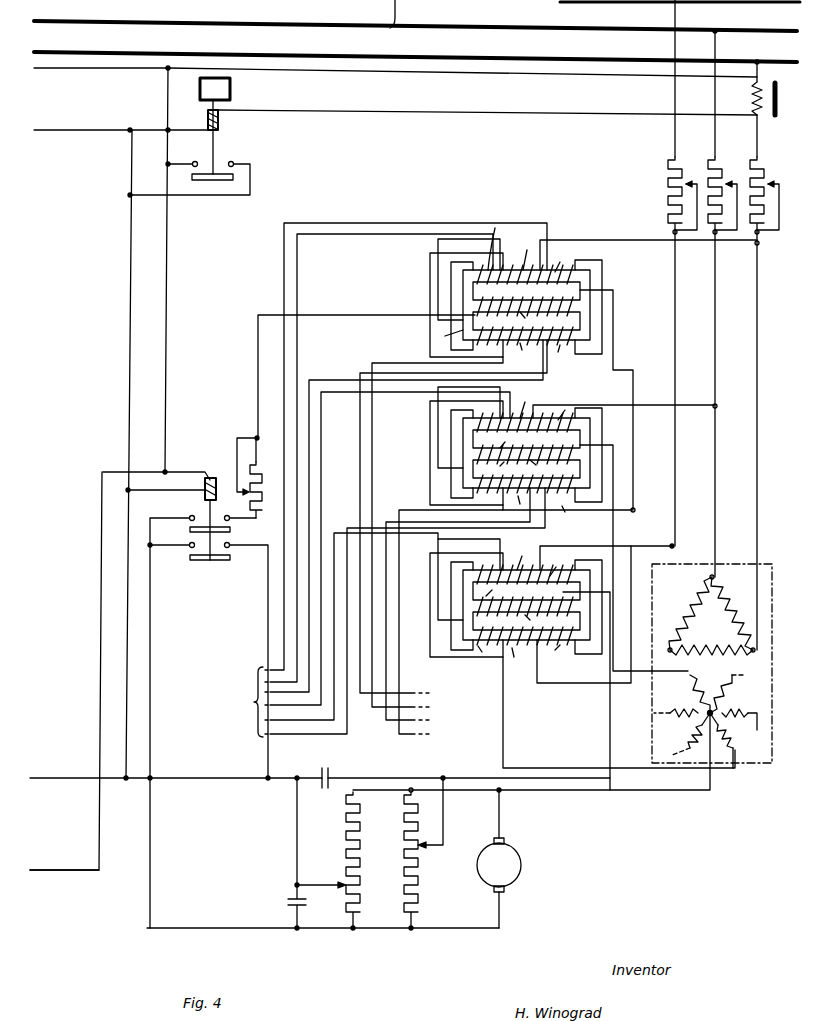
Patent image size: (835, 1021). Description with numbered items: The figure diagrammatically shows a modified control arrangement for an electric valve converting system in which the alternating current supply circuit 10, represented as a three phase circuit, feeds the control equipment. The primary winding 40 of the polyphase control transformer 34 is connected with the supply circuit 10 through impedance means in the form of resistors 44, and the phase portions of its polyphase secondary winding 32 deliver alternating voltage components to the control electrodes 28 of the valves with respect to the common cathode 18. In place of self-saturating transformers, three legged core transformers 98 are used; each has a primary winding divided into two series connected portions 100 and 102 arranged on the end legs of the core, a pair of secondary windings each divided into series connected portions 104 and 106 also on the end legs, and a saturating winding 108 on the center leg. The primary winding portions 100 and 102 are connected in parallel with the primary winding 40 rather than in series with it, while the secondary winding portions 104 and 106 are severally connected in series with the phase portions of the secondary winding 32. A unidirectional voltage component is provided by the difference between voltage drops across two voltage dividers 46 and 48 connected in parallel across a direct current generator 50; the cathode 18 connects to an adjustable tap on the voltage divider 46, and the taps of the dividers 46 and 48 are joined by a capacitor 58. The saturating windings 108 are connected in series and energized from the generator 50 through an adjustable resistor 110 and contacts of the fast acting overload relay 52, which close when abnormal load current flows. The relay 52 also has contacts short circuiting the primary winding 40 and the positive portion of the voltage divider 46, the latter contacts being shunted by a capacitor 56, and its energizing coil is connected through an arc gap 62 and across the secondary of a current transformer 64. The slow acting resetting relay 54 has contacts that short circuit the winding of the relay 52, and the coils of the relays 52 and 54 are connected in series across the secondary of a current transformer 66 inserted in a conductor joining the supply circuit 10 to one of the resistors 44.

The alternating current supply circuit 10 is at (393, 35).
The current transformer 64 is at (40, 130).
The resetting relay 54 is at (220, 143).
The current transformer 66 is at (778, 118).
The resistors 44 is at (690, 152).
The three legged core transformer 98 is at (592, 282).
The primary winding portion 100 is at (525, 403).
The primary winding portion 102 is at (519, 509).
The secondary winding portion 104 is at (531, 405).
The secondary winding portion 106 is at (496, 497).
The saturating winding 108 is at (535, 472).
The control electrode 28 is at (348, 480).
The overload relay 52 is at (212, 476).
The adjustable resistor 110 is at (262, 518).
The cathode 18 is at (62, 775).
The arc gap 62 is at (46, 870).
The capacitor 58 is at (330, 766).
The capacitor 56 is at (288, 900).
The voltage divider 46 is at (364, 886).
The voltage divider 48 is at (418, 898).
The direct current generator 50 is at (522, 862).
The polyphase control transformer 34 is at (772, 690).
The primary winding 40 is at (722, 592).
The polyphase secondary winding 32 is at (680, 742).